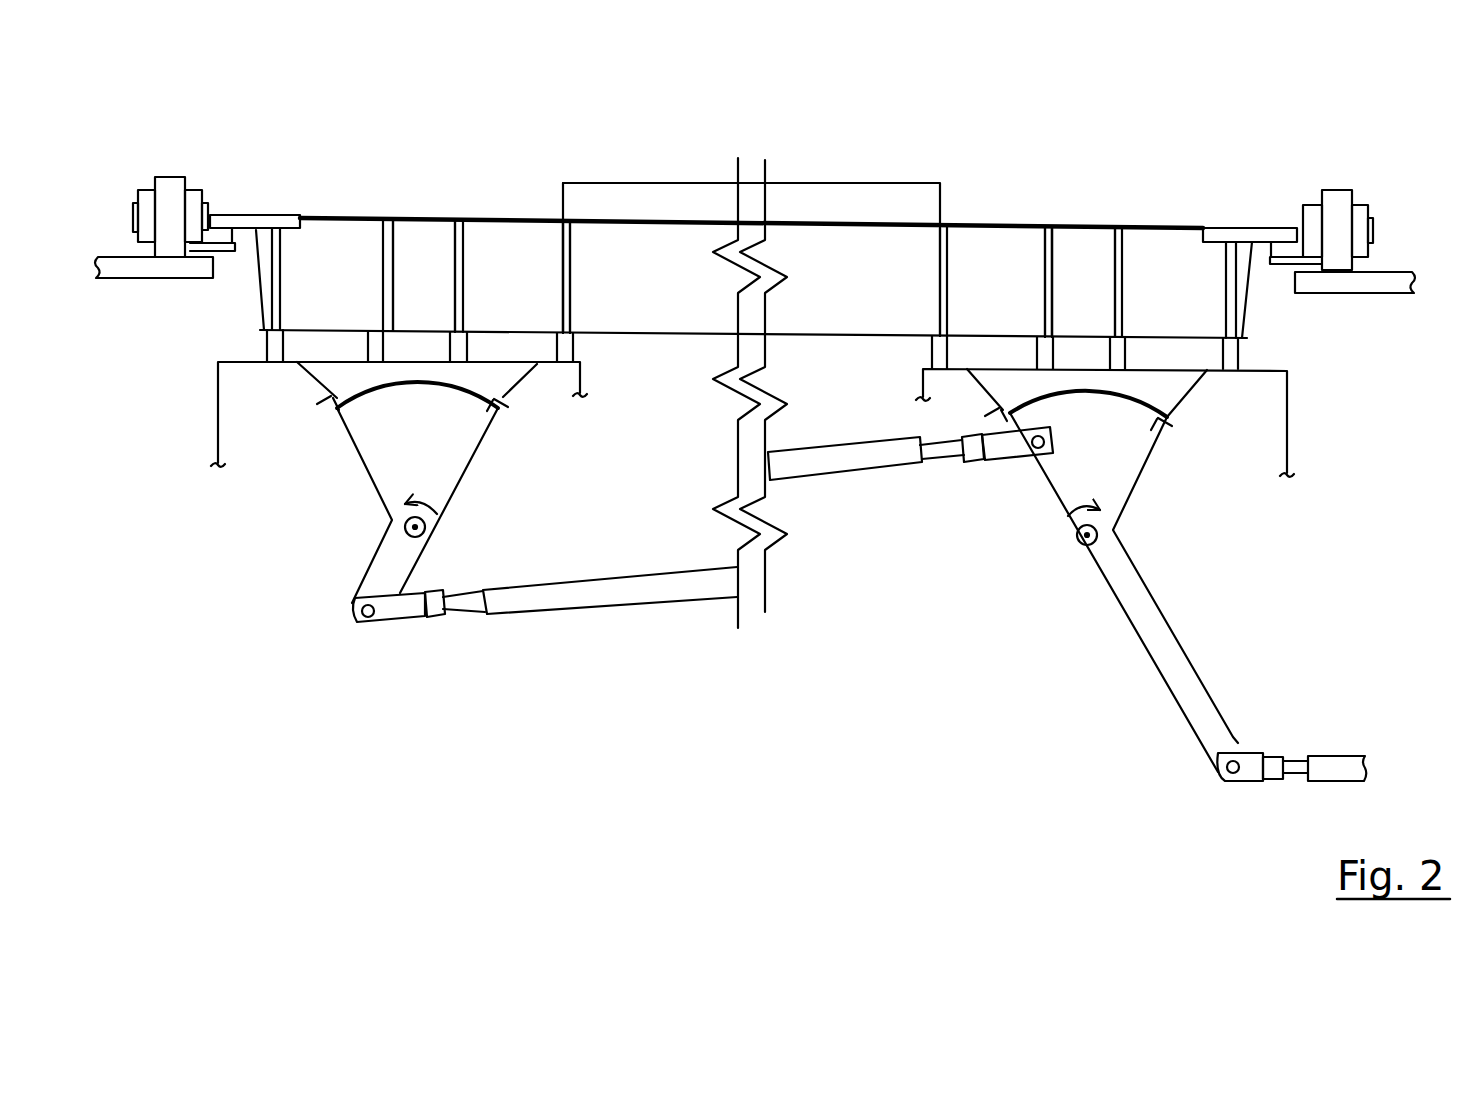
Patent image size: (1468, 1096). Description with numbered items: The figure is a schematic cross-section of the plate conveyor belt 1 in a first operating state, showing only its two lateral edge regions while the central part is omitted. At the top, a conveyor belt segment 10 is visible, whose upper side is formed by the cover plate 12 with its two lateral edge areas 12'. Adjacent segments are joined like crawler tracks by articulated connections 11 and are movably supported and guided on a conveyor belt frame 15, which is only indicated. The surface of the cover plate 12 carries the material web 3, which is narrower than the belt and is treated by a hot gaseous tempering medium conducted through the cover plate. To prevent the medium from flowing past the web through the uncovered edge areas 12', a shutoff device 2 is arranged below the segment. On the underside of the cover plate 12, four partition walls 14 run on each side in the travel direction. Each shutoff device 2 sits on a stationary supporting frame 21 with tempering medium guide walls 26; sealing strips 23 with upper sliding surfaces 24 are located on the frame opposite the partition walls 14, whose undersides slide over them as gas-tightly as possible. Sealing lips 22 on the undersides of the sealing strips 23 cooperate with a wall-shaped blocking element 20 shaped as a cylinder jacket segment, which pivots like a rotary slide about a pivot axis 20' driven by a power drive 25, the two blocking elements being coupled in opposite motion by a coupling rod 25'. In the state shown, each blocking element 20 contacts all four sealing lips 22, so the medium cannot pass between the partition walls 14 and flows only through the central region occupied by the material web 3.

The plate conveyor belt 1 is at (500, 165).
The shutoff device 2 is at (298, 505).
The material web 3 is at (798, 180).
The conveyor belt segment 10 is at (232, 293).
The articulated connections 11 is at (168, 166).
The cover plate 12 is at (751, 278).
The lateral edge areas 12' is at (788, 278).
The partition walls 14 is at (381, 268).
The conveyor belt frame 15 is at (120, 257).
The blocking element 20 is at (752, 477).
The pivot axis 20' is at (752, 576).
The supporting frame 21 is at (203, 403).
The sealing lips 22 is at (325, 403).
The sealing strips 23 is at (1302, 330).
The sliding surfaces 24 is at (566, 326).
The power drive 25 is at (1292, 723).
The coupling rod 25' is at (703, 524).
The tempering medium guide walls 26 is at (216, 447).